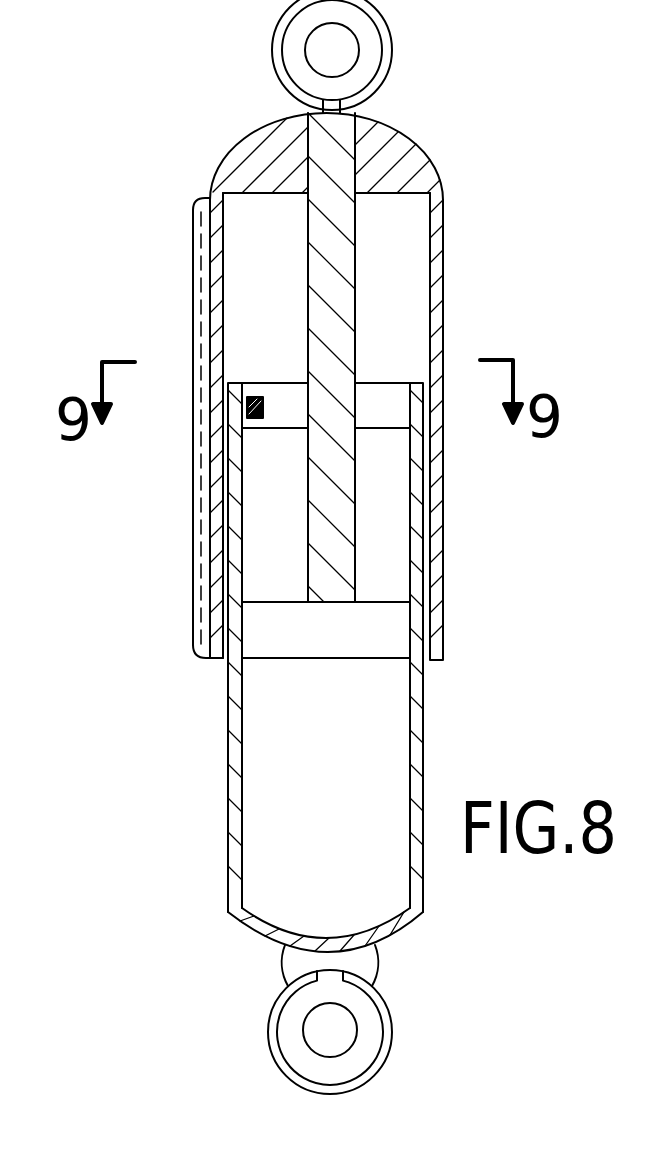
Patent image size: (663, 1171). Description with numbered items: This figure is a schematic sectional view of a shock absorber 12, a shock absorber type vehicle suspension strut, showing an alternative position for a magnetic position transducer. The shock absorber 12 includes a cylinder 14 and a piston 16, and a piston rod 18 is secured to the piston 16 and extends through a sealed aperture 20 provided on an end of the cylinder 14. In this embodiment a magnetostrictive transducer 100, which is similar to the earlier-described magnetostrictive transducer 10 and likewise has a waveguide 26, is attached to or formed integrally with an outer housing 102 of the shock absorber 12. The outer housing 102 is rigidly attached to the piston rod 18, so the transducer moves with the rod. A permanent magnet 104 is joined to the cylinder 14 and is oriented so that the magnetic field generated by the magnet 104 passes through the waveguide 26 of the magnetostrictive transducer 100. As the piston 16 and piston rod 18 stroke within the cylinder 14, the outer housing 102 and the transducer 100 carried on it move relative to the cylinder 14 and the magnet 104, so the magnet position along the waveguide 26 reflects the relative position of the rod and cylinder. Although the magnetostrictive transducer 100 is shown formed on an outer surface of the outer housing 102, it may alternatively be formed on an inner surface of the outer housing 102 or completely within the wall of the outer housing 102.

The magnetostrictive transducer 10 is at (355, 222).
The shock absorber 12 is at (455, 182).
The cylinder 14 is at (427, 682).
The piston 16 is at (378, 628).
The piston rod 18 is at (333, 528).
The sealed aperture 20 is at (380, 383).
The waveguide 26 is at (200, 623).
The magnetostrictive transducer 100 is at (193, 203).
The outer housing 102 is at (260, 135).
The permanent magnet 104 is at (250, 405).